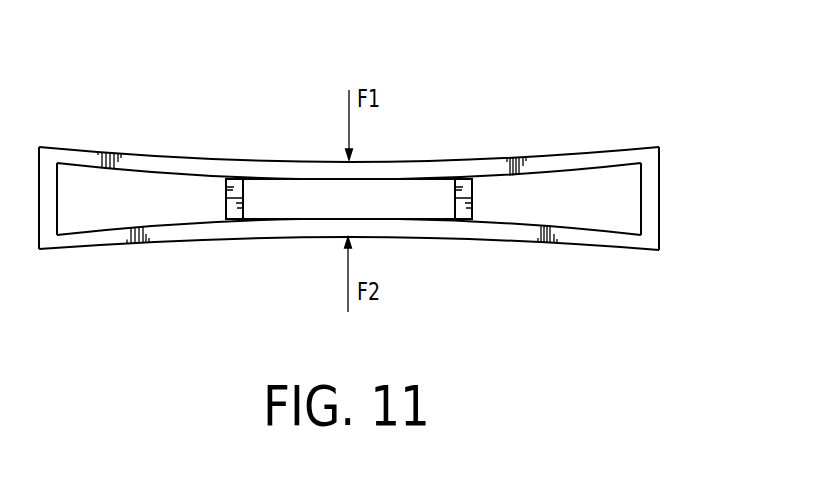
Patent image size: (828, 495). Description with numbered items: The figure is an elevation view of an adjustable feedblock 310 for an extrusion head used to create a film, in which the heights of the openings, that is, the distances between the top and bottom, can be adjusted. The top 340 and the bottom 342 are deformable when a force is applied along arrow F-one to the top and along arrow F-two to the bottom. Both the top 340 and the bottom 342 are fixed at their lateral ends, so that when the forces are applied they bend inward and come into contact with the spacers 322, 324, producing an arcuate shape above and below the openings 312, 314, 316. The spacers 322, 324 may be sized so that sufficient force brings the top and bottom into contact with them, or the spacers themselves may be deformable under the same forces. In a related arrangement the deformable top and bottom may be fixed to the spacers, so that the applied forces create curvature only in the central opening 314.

The adjustable feedblock 310 is at (383, 193).
The opening 312 is at (108, 203).
The central opening 314 is at (296, 205).
The opening 316 is at (522, 206).
The spacer 322 is at (226, 195).
The spacer 324 is at (465, 193).
The top 340 is at (272, 170).
The bottom 342 is at (588, 240).